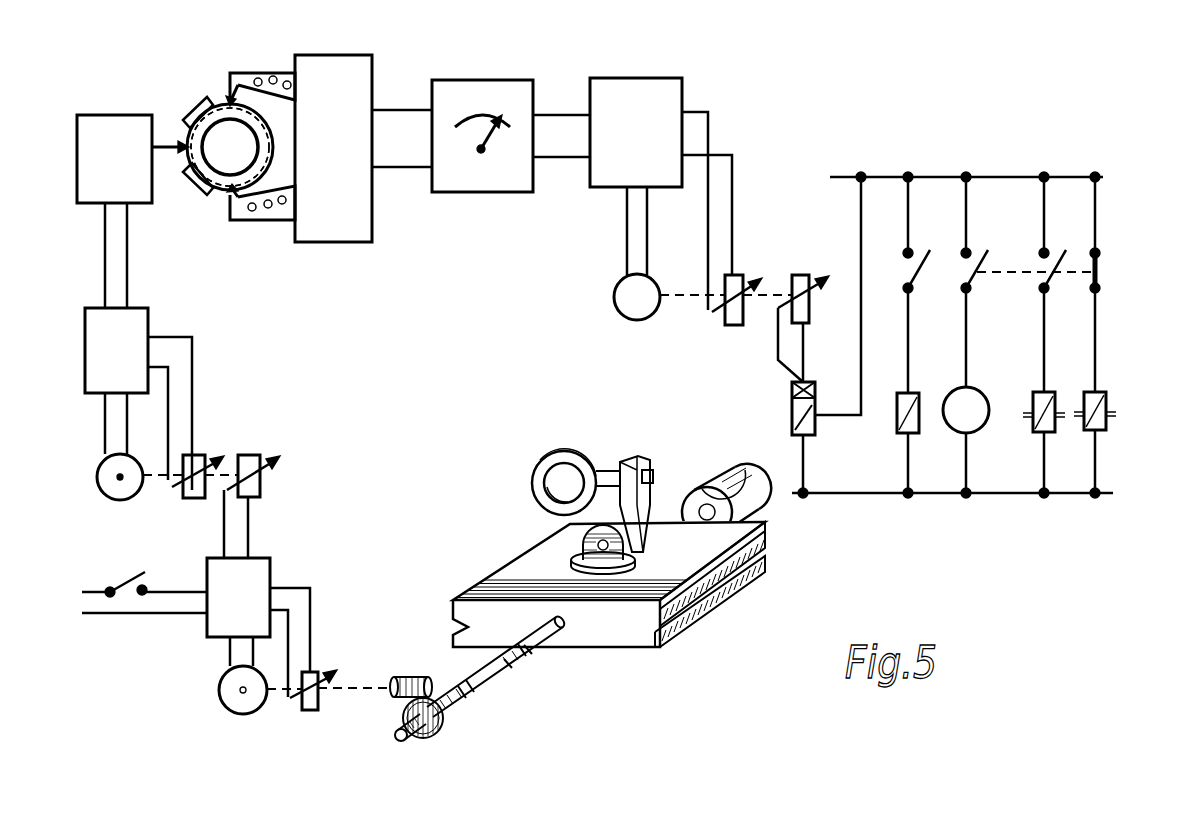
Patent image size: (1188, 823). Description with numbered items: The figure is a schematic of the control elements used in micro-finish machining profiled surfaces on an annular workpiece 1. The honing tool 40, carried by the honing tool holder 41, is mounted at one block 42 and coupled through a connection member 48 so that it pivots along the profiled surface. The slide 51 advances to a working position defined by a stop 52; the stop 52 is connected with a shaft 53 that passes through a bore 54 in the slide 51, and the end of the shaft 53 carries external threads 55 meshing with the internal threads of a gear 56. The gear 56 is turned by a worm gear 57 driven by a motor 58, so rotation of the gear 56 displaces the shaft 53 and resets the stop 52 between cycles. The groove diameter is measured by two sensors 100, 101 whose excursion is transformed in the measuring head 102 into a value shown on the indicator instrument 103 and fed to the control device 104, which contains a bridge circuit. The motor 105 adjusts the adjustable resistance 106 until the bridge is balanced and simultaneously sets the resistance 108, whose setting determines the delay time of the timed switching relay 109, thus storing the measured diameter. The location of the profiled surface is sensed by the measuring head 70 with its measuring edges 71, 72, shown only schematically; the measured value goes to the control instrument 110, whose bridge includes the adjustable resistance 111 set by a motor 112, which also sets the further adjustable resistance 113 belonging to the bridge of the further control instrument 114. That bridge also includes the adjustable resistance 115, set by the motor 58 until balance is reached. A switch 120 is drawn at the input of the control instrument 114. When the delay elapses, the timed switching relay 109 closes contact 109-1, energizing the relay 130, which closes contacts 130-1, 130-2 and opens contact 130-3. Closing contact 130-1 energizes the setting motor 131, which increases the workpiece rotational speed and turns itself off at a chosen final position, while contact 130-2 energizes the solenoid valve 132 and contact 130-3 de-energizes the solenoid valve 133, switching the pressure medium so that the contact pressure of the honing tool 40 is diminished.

The workpiece 1 is at (538, 473).
The honing tool 40 is at (626, 458).
The honing tool holder 41 is at (647, 466).
The block 42 is at (582, 552).
The connection member 48 is at (713, 595).
The slide 51 is at (617, 628).
The stop 52 is at (727, 482).
The shaft 53 is at (503, 662).
The bore 54 is at (567, 625).
The external threads 55 is at (465, 702).
The gear 56 is at (440, 732).
The worm gear 57 is at (404, 676).
The motor 58 is at (243, 703).
The measuring head 70 is at (103, 130).
The measuring edge 71 is at (162, 140).
The measuring edge 72 is at (230, 147).
The sensor 100 is at (268, 77).
The sensor 101 is at (260, 219).
The measuring head 102 is at (348, 78).
The indicator instrument 103 is at (508, 90).
The control device 104 is at (657, 90).
The motor 105 is at (624, 290).
The adjustable resistance 106 is at (733, 283).
The resistance 108 is at (797, 273).
The timed switching relay 109 is at (797, 408).
The contact 109-1 is at (922, 282).
The control instrument 110 is at (103, 347).
The adjustable resistance 111 is at (193, 490).
The motor 112 is at (110, 488).
The adjustable resistance 113 is at (263, 486).
The control instrument 114 is at (260, 583).
The adjustable resistance 115 is at (308, 710).
The switch 120 is at (127, 574).
The relay 130 is at (900, 426).
The contact 130-1 is at (985, 280).
The contact 130-2 is at (1062, 285).
The contact 130-3 is at (1098, 270).
The setting motor 131 is at (965, 418).
The solenoid valve 132 is at (1037, 430).
The solenoid valve 133 is at (1107, 423).